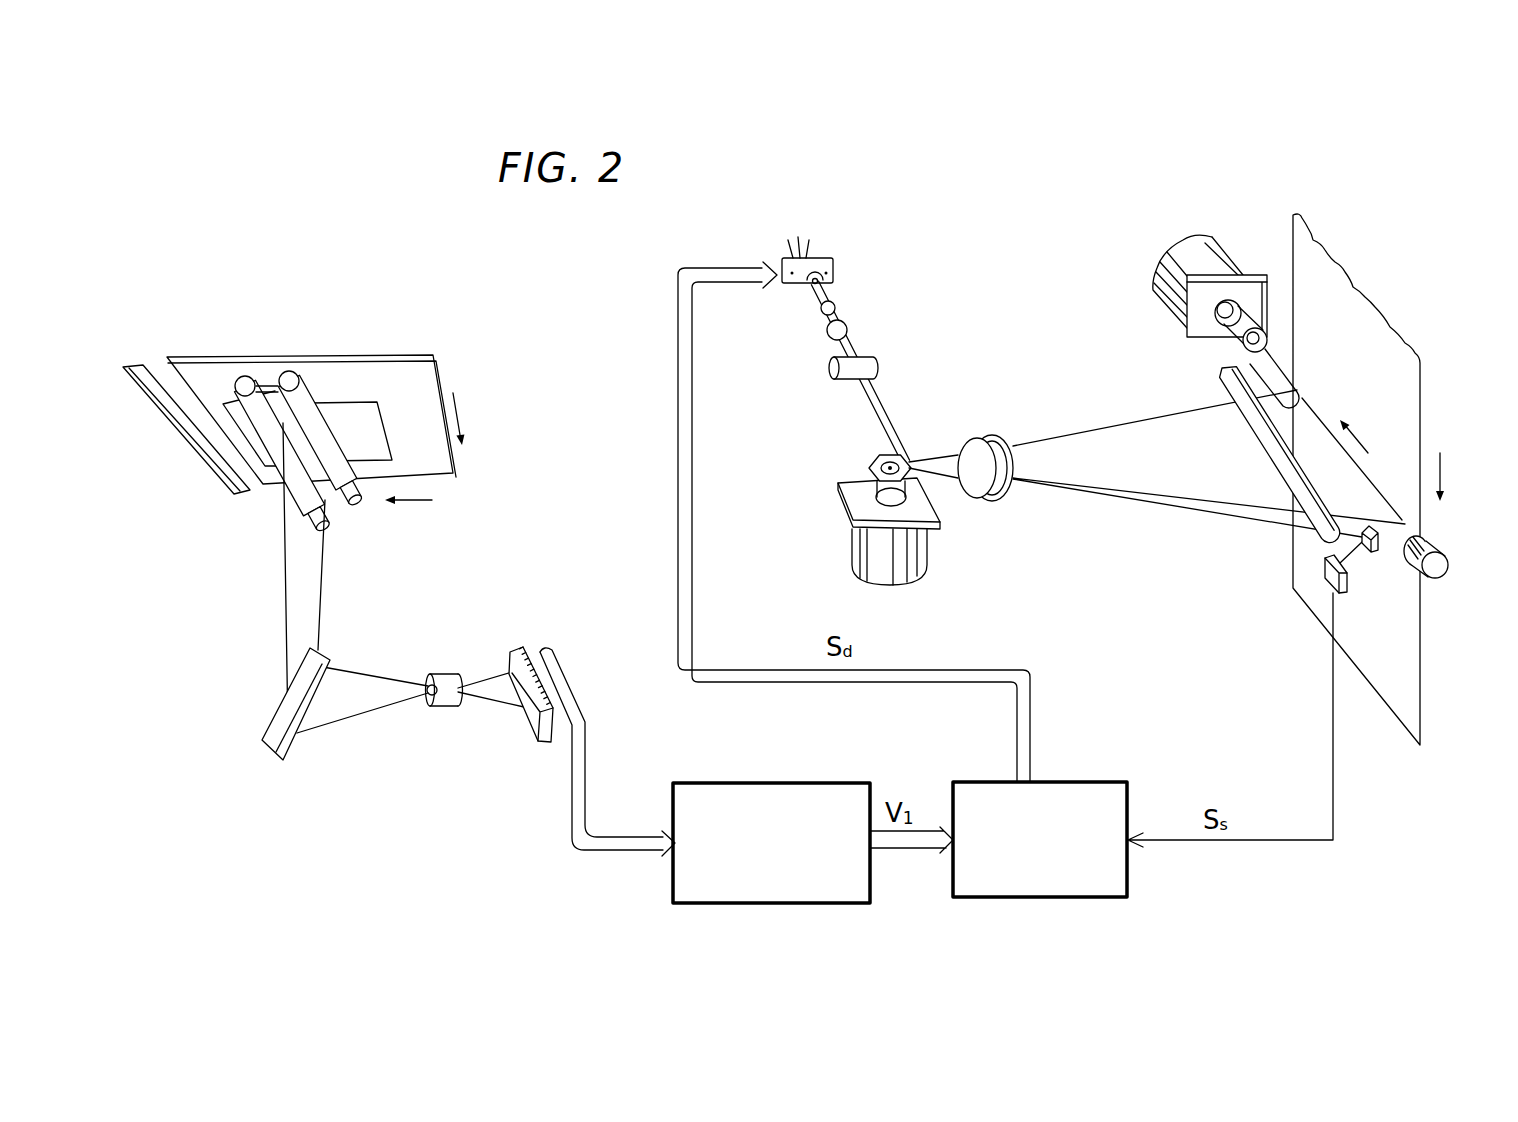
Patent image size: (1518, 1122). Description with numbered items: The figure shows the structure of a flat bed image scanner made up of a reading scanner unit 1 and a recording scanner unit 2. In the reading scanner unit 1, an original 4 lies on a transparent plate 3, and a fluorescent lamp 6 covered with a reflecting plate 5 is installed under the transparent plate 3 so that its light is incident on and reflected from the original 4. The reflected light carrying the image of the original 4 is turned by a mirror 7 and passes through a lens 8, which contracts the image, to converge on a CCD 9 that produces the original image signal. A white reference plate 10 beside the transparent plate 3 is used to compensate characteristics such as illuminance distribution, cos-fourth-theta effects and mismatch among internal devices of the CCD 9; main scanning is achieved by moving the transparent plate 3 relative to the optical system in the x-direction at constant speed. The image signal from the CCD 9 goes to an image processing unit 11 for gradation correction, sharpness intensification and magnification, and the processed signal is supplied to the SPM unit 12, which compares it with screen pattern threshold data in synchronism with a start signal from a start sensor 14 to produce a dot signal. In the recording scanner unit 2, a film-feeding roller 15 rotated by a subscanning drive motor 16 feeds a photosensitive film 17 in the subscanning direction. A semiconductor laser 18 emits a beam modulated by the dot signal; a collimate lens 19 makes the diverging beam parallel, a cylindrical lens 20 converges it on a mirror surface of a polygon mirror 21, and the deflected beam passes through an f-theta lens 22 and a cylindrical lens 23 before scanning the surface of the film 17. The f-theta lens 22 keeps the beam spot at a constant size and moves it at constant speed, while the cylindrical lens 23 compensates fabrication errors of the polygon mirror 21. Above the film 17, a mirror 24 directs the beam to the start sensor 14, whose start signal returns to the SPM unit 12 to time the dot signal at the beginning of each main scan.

The reading scanner unit 1 is at (307, 304).
The recording scanner unit 2 is at (1033, 281).
The transparent plate 3 is at (438, 368).
The original 4 is at (360, 400).
The reflecting plate 5 is at (297, 378).
The fluorescent lamp 6 is at (240, 372).
The mirror 7 is at (268, 721).
The lens 8 is at (443, 708).
The CCD 9 is at (518, 648).
The white reference plate 10 is at (127, 362).
The image processing unit 11 is at (773, 783).
The SPM unit 12 is at (1098, 782).
The start sensor 14 is at (1347, 594).
The film-feeding roller 15 is at (1440, 543).
The subscanning drive motor 16 is at (1213, 244).
The film 17 is at (1422, 392).
The semiconductor laser 18 is at (833, 264).
The collimate lens 19 is at (848, 311).
The cylindrical lens 20 is at (883, 365).
The polygon mirror 21 is at (866, 461).
The f-theta lens 22 is at (988, 436).
The cylindrical lens 23 is at (1256, 452).
The mirror 24 is at (1378, 550).